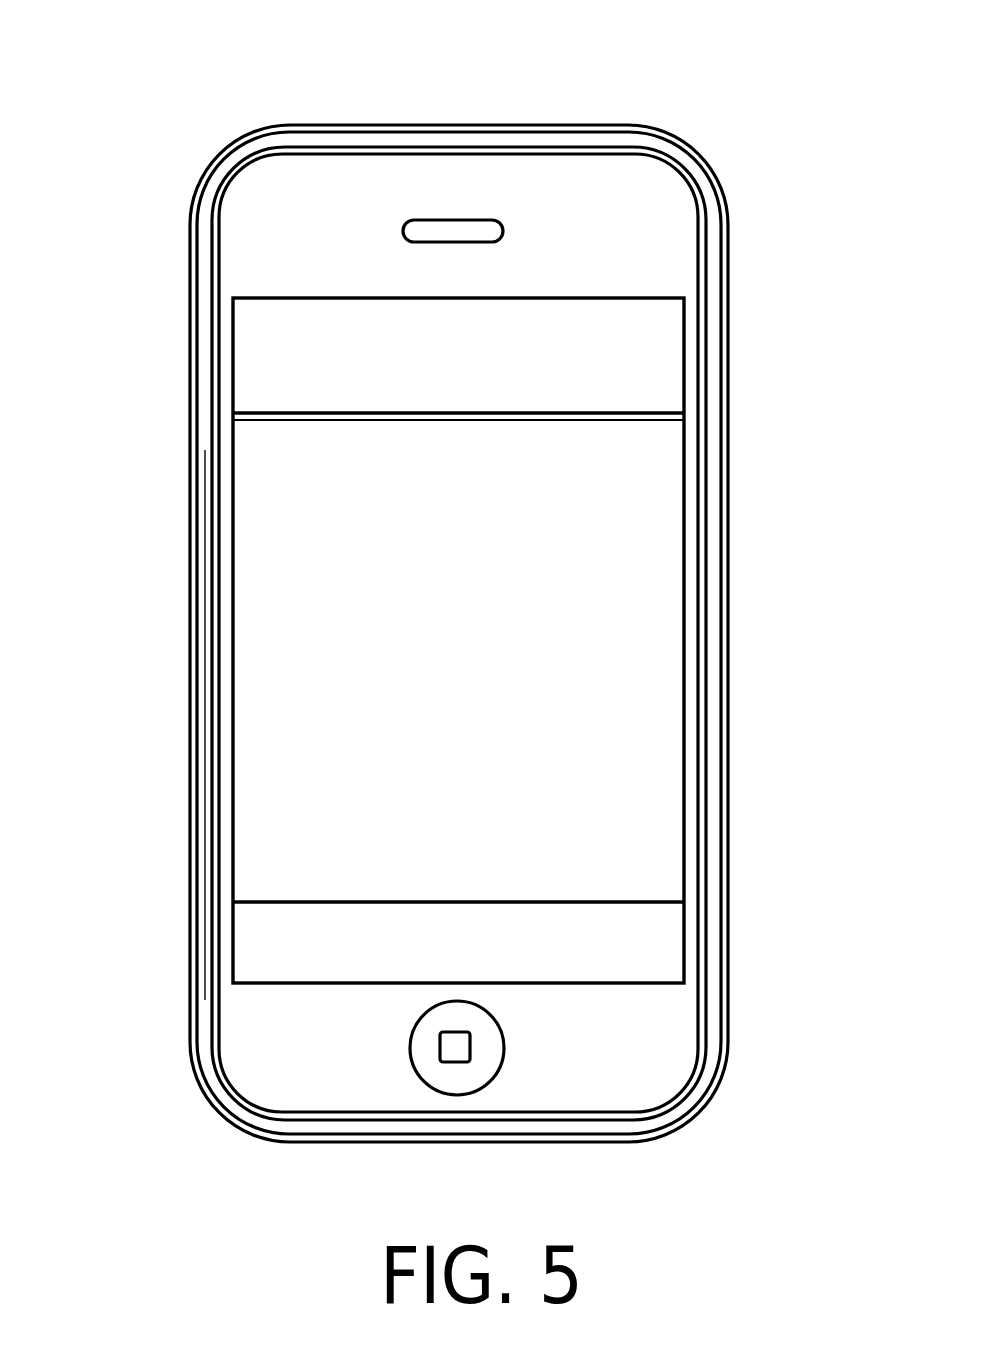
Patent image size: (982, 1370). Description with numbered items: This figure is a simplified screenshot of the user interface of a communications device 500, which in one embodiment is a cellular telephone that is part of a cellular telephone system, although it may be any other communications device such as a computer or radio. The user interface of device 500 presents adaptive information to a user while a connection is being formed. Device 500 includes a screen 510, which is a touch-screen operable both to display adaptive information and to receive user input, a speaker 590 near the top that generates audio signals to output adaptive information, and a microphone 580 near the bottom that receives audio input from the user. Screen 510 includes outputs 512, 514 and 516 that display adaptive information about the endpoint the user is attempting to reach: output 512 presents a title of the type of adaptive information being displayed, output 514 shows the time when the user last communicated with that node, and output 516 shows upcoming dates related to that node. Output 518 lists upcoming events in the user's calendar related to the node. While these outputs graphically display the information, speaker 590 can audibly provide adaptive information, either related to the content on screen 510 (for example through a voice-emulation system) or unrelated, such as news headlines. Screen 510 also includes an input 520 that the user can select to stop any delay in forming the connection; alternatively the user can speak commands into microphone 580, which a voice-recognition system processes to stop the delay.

The device 500 is at (132, 36).
The speaker 590 is at (425, 219).
The screen 510 is at (611, 298).
The output 512 is at (285, 329).
The output 514 is at (317, 556).
The output 516 is at (598, 637).
The output 518 is at (613, 757).
The input 520 is at (367, 947).
The microphone 580 is at (428, 1044).